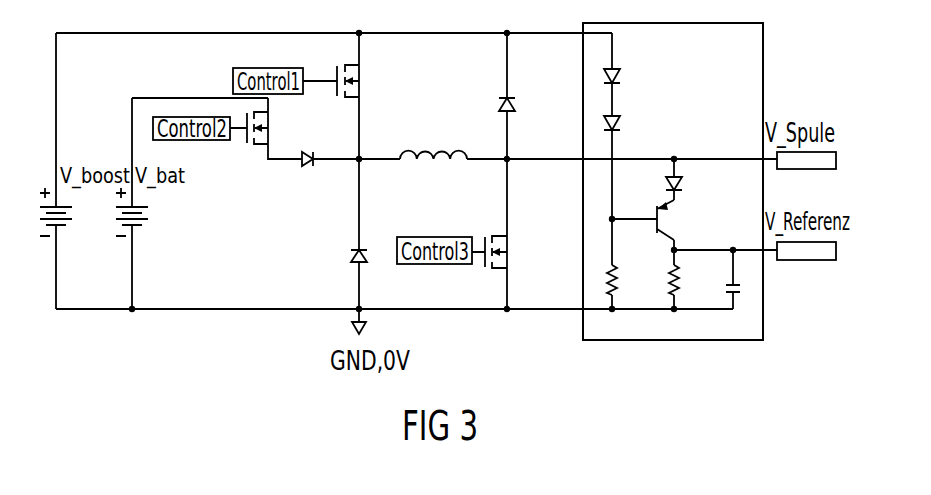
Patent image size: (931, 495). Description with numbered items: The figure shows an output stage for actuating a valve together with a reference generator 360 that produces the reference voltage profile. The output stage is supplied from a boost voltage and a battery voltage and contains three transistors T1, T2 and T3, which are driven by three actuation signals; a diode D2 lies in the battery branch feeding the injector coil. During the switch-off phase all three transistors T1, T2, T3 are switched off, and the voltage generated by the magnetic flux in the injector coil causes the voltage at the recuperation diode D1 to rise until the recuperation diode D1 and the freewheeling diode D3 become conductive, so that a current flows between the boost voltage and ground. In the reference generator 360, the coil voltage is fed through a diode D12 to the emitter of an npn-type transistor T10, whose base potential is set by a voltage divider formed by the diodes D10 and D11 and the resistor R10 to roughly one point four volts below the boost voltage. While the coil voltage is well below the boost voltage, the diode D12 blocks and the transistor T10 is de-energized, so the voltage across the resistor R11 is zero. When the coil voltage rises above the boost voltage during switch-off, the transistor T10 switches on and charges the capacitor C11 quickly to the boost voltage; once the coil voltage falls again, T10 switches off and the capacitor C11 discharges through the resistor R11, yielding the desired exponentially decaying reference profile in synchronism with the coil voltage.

The reference generator 360 is at (765, 332).
The transistor T1 is at (347, 79).
The transistor T2 is at (264, 126).
The transistor T3 is at (506, 250).
The recuperation diode D1 is at (492, 103).
The diode D2 is at (306, 147).
The freewheeling diode D3 is at (343, 259).
The diode D10 is at (636, 74).
The diode D11 is at (636, 121).
The diode D12 is at (696, 186).
The npn-type transistor T10 is at (683, 220).
The resistor R10 is at (631, 282).
The resistor R11 is at (692, 282).
The capacitor C11 is at (744, 276).